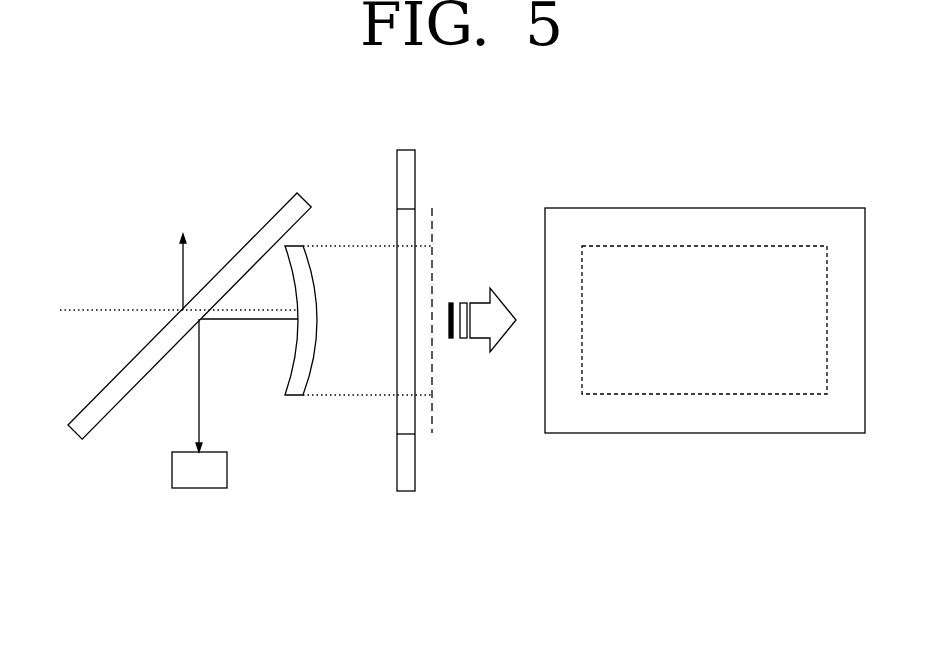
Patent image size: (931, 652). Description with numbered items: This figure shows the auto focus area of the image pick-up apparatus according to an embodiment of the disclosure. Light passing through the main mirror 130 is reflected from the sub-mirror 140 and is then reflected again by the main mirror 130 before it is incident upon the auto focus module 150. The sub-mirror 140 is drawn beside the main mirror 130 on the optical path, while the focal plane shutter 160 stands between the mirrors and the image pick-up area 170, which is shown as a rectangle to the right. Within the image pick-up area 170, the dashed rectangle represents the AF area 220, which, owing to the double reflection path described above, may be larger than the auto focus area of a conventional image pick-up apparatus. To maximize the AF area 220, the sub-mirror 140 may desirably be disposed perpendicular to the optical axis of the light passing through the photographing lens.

The main mirror 130 is at (280, 208).
The sub-mirror 140 is at (290, 397).
The auto focus module 150 is at (227, 470).
The focal plane shutter 160 is at (408, 492).
The image pick-up area 170 is at (432, 425).
The AF area 220 is at (750, 245).